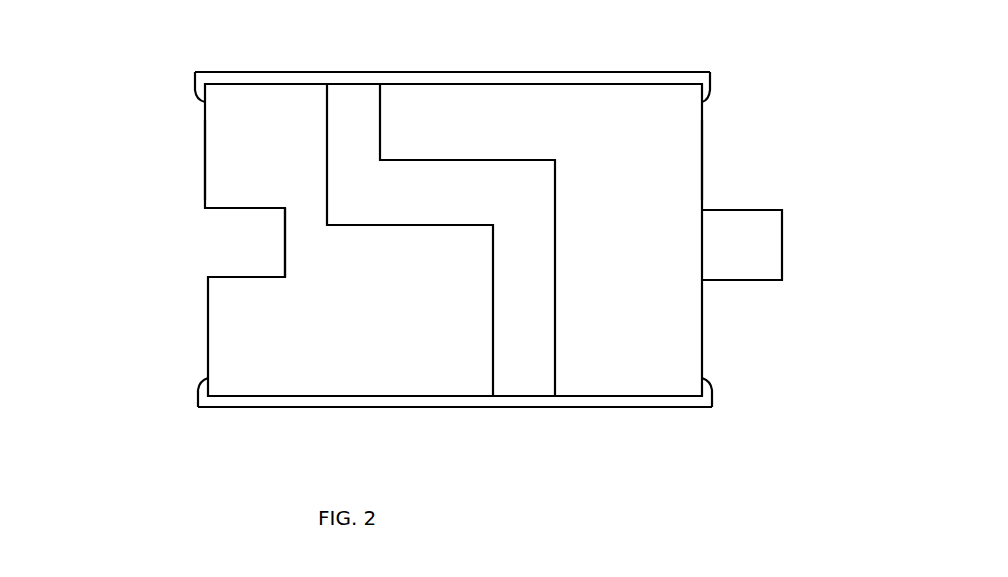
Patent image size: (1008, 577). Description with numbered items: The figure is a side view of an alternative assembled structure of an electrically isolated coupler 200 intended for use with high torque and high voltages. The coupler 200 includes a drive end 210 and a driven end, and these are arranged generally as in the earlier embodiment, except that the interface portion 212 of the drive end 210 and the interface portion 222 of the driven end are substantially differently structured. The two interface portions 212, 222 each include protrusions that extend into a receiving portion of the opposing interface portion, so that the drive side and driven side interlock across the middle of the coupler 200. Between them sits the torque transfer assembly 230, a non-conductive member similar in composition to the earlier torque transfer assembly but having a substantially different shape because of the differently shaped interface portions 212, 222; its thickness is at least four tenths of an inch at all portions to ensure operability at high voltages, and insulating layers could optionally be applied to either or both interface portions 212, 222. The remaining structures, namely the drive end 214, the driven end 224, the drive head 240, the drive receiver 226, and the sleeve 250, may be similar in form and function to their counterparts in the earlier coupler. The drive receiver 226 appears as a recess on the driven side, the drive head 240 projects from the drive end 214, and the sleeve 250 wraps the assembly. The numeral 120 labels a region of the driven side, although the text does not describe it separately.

The electrically isolated coupler 200 is at (176, 489).
The interface portion of the drive end 212 is at (446, 106).
The drive end 214 is at (700, 157).
The sleeve 250 is at (247, 73).
The torque transfer assembly 230 is at (348, 128).
The drive head 240 is at (728, 265).
The driven end 224 is at (205, 173).
The drive receiver 226 is at (228, 241).
The first chamber 120 is at (268, 367).
The interface portion of the driven end 222 is at (383, 368).
The drive end 210 is at (586, 367).